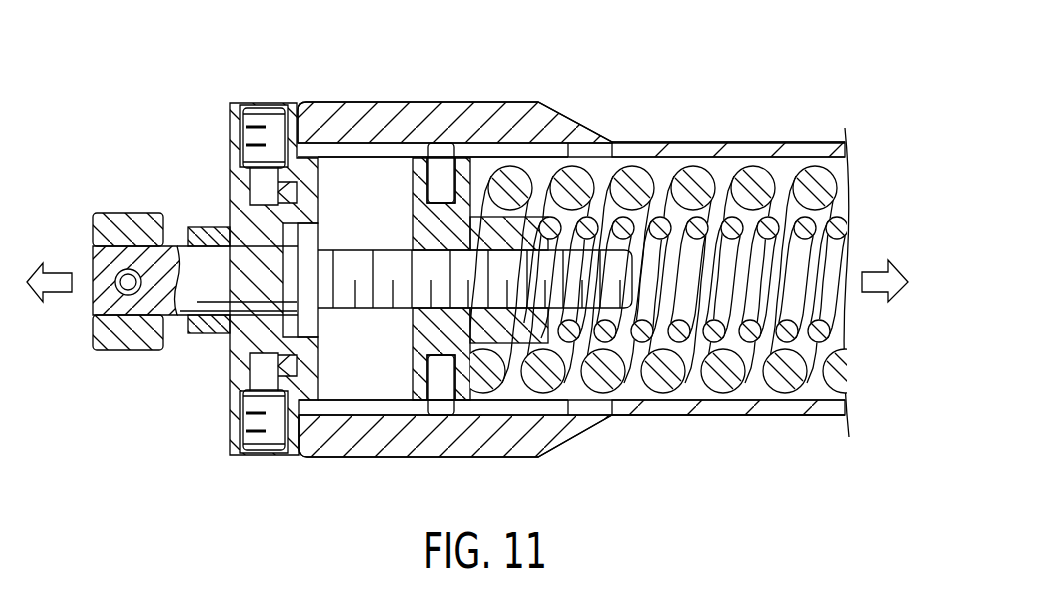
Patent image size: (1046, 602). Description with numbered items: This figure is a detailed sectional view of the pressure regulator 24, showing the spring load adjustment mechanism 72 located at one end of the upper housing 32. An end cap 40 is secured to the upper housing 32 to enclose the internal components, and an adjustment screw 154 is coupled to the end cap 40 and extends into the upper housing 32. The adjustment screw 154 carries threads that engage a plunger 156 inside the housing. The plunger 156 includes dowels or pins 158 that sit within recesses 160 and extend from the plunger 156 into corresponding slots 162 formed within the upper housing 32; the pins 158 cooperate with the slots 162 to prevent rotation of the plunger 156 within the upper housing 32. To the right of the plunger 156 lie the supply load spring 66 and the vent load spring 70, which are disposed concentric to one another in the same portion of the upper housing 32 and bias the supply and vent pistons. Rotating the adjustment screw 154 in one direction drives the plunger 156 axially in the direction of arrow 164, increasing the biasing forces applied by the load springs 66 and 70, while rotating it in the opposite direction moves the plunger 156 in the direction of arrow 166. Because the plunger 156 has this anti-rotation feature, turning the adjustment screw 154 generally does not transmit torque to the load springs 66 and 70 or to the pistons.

The pressure regulator 24 is at (146, 72).
The upper housing 32 is at (553, 115).
The end cap 40 is at (233, 367).
The supply load spring 66 is at (745, 178).
The vent load spring 70 is at (807, 226).
The spring load adjustment mechanism 72 is at (377, 246).
The adjustment screw 154 is at (105, 222).
The plunger 156 is at (433, 218).
The pins 158 is at (445, 148).
The recesses 160 is at (455, 207).
The slots 162 is at (338, 147).
The arrow 164 is at (876, 294).
The arrow 166 is at (68, 295).